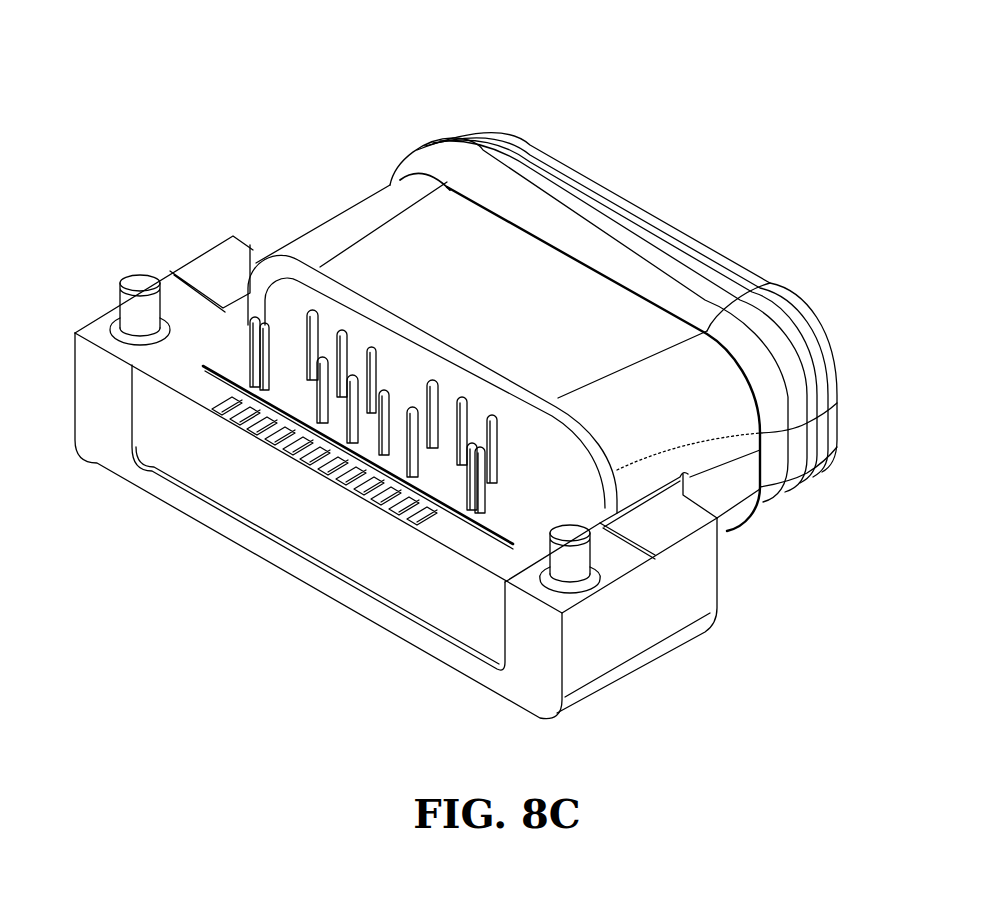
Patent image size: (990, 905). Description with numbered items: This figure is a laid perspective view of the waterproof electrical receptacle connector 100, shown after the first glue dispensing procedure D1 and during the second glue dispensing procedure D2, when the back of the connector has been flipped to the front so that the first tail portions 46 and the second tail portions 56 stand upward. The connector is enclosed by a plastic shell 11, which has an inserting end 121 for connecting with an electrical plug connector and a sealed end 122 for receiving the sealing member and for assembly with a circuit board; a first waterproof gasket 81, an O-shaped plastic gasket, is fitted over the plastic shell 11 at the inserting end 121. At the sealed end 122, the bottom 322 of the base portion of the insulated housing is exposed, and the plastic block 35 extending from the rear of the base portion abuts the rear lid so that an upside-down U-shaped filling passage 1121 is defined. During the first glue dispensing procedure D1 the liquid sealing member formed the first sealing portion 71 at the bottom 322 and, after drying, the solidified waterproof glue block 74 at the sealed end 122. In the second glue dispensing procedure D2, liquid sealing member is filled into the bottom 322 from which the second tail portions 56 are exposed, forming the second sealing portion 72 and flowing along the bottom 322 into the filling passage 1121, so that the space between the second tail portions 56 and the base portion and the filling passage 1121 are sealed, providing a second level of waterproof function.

The waterproof electrical receptacle connector 100 is at (700, 71).
The plastic shell 11 is at (349, 178).
The first waterproof gasket 81 is at (450, 143).
The inserting end 121 is at (756, 262).
The sealed end 122 is at (788, 480).
The first sealing portion 71 is at (540, 452).
The second sealing portion 72 is at (592, 578).
The waterproof glue block 74 is at (452, 388).
The second tail portion 56 is at (330, 352).
The first tail portion 46 is at (225, 418).
The plastic block 35 is at (270, 506).
The bottom of the base portion 322 is at (247, 341).
The filling passage 1121 is at (227, 348).
The first glue dispensing procedure D1 is at (330, 313).
The second glue dispensing procedure D2 is at (517, 518).